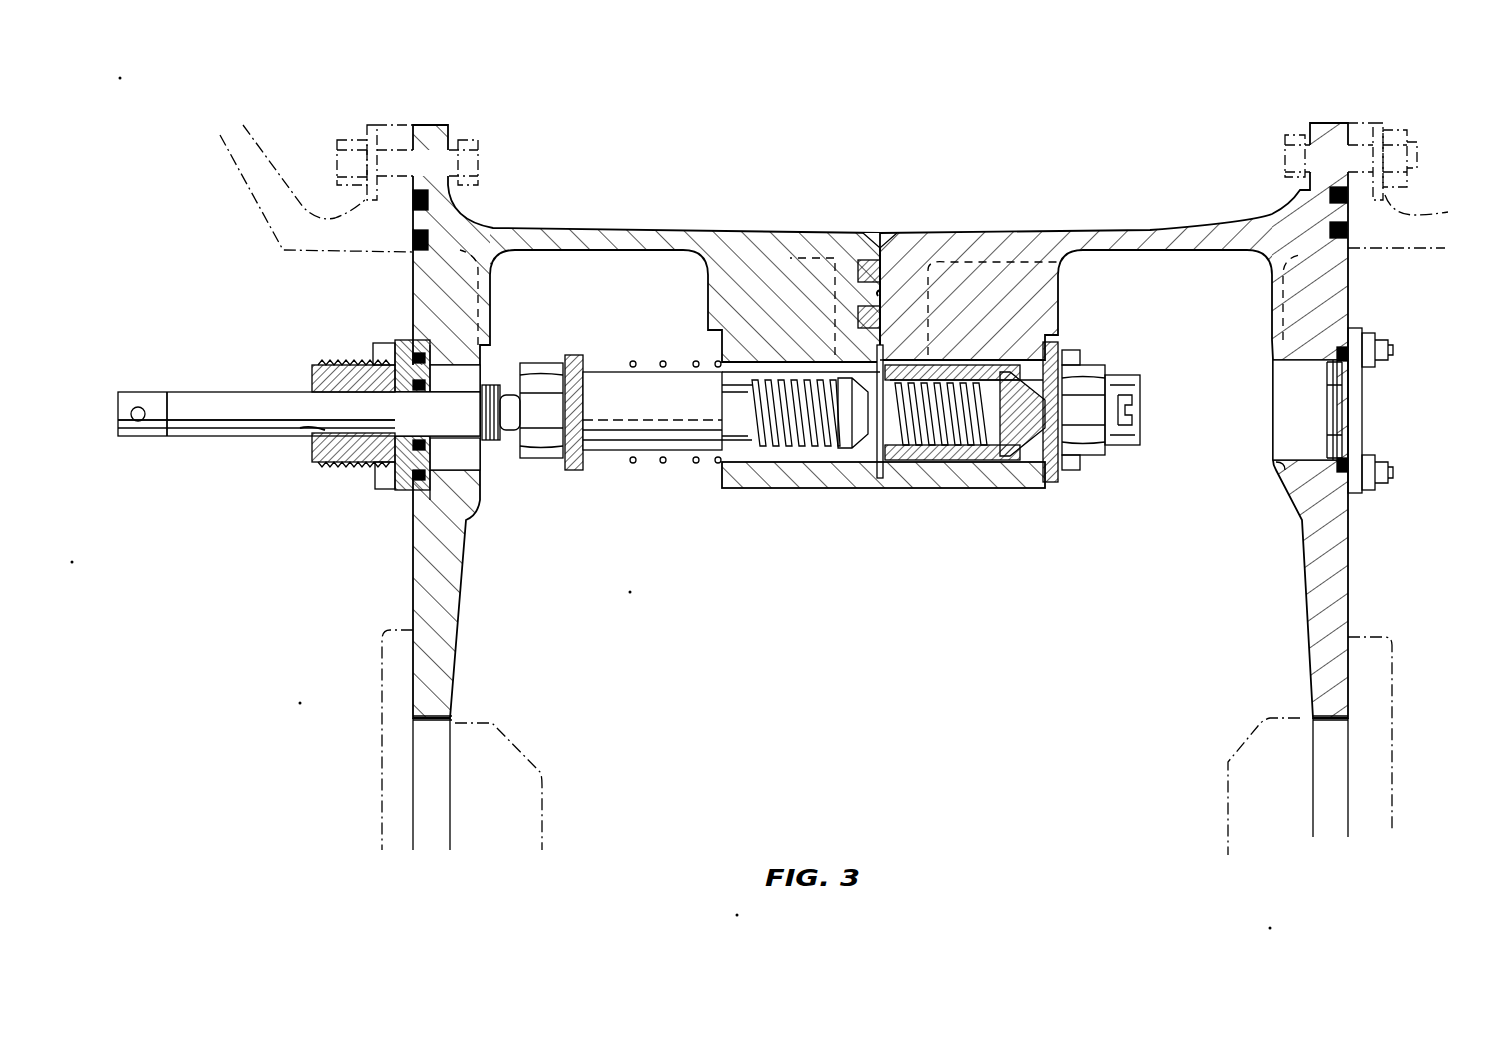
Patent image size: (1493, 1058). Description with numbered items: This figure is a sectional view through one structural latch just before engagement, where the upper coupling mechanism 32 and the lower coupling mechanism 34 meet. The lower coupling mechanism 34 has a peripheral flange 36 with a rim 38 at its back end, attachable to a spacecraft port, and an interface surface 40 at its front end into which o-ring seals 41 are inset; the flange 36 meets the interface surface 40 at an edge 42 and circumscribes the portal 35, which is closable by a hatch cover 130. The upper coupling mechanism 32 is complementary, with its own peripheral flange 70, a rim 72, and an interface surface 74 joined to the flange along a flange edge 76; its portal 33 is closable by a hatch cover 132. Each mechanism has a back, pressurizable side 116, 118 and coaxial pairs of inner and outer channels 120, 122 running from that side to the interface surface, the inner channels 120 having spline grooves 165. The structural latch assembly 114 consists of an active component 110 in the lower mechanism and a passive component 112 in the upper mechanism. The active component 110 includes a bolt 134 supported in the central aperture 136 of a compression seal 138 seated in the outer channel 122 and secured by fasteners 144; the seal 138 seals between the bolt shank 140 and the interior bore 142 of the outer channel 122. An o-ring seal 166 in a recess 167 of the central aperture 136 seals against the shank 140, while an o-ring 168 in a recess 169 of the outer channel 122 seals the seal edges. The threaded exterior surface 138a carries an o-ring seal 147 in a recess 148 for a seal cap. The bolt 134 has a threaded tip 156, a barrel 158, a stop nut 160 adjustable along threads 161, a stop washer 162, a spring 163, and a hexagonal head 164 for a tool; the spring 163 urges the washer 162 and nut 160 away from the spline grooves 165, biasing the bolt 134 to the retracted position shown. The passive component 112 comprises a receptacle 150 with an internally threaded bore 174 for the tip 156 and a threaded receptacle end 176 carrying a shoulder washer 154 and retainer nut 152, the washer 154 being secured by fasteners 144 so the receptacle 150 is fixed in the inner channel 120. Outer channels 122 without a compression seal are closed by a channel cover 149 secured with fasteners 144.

The upper coupling mechanism 32 is at (1160, 212).
The portal 33 is at (1348, 822).
The lower coupling mechanism 34 is at (565, 205).
The portal 35 is at (410, 835).
The peripheral flange 36 is at (682, 238).
The rim 38 is at (435, 128).
The interface surface 40 is at (868, 300).
The o-ring seals 41 is at (848, 240).
The edge 42 is at (870, 235).
The peripheral flange 70 is at (990, 235).
The rim 72 is at (1320, 128).
The interface surface 74 is at (882, 296).
The flange edge 76 is at (887, 238).
The active component 110 is at (578, 490).
The passive component 112 is at (1121, 413).
The structural latch assembly 114 is at (774, 416).
The pressurizable side 116 is at (413, 572).
The pressurizable side 118 is at (1352, 590).
The inner channel 120 is at (866, 466).
The outer channel 122 is at (492, 365).
The hatch cover 130 is at (512, 738).
The hatch cover 132 is at (1240, 730).
The bolt 134 is at (258, 390).
The central aperture 136 is at (300, 438).
The compression seal 138 is at (318, 365).
The exterior surface 138a is at (335, 466).
The bolt shank 140 is at (218, 432).
The interior bore 142 is at (482, 462).
The fasteners 144 is at (378, 343).
The o-ring seal 147 is at (378, 485).
The recess 148 is at (392, 430).
The channel cover 149 is at (1362, 388).
The receptacle 150 is at (945, 455).
The retainer nut 152 is at (1100, 370).
The shoulder washer 154 is at (1056, 345).
The threaded tip 156 is at (798, 448).
The barrel 158 is at (618, 442).
The stop nut 160 is at (542, 362).
The threads 161 is at (490, 442).
The stop washer 162 is at (580, 355).
The spring 163 is at (660, 466).
The hexagonal head 164 is at (134, 392).
The spline grooves 165 is at (774, 465).
The o-ring seal 166 is at (420, 432).
The recess 167 is at (450, 350).
The o-ring 168 is at (1340, 348).
The recess 169 is at (430, 308).
The internally threaded bore 174 is at (988, 432).
The threaded receptacle end 176 is at (1138, 405).